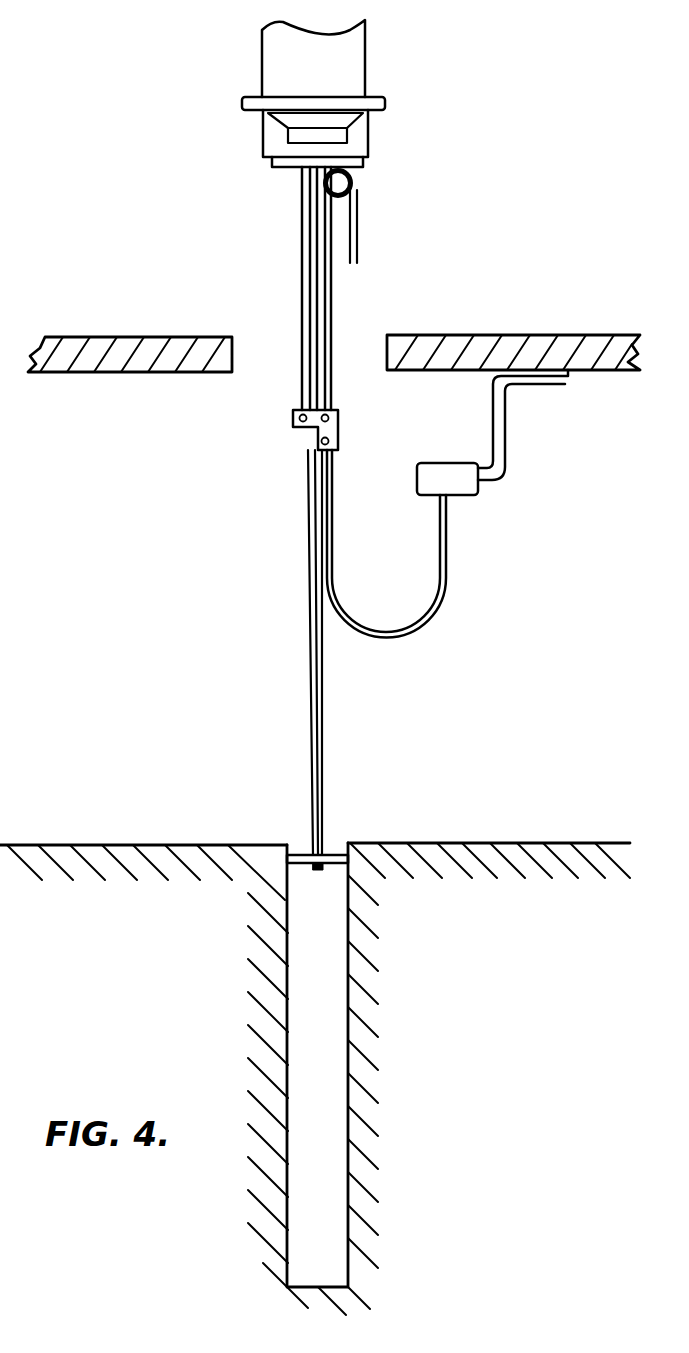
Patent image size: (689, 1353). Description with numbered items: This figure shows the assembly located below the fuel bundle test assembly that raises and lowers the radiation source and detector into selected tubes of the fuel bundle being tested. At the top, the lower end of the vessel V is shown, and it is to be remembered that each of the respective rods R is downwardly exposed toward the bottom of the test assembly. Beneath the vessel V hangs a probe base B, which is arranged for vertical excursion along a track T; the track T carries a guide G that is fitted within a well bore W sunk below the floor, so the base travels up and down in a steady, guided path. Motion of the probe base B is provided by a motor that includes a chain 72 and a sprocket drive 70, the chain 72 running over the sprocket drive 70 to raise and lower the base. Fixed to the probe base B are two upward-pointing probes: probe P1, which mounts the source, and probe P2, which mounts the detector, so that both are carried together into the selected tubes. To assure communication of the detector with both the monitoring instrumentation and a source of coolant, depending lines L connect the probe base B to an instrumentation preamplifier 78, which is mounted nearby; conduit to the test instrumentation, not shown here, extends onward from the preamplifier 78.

The rods R is at (290, 78).
The vessel V is at (392, 62).
The sprocket drive 70 is at (352, 182).
The chain 72 is at (325, 237).
The probe mounting the detector P2 is at (310, 310).
The probe mounting the source P1 is at (306, 346).
The probe base B is at (296, 419).
The instrumentation preamplifier 78 is at (423, 462).
The depending lines L is at (395, 638).
The track T is at (310, 626).
The guide G is at (330, 855).
The well bore W is at (348, 1034).